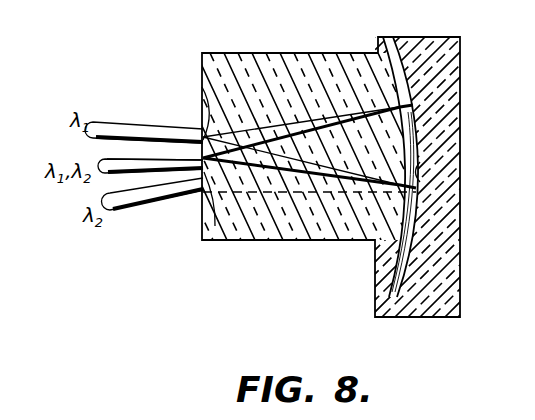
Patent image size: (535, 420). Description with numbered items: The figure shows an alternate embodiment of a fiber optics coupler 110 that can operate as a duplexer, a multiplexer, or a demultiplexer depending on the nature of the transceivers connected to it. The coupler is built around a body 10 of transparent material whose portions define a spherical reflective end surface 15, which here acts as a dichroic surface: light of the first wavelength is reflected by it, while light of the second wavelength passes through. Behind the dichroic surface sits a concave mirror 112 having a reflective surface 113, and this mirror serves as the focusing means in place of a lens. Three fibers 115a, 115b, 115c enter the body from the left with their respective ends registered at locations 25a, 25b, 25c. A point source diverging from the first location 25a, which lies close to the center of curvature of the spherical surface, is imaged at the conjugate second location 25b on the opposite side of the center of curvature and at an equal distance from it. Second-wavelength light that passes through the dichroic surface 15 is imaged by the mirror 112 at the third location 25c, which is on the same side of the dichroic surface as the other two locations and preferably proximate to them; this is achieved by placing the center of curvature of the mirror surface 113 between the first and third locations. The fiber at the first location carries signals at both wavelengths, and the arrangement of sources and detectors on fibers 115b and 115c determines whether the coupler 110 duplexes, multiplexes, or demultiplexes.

The body 10 is at (303, 53).
The concave mirror 112 is at (461, 93).
The reflective surface 113 is at (414, 168).
The spherical reflective end surface 15 is at (383, 213).
The first location 25a is at (201, 150).
The second location 25b is at (202, 87).
The location 25c is at (215, 226).
The fiber 115a is at (131, 174).
The fiber 115b is at (154, 122).
The fiber 115c is at (147, 211).
The coupler 110 is at (362, 304).